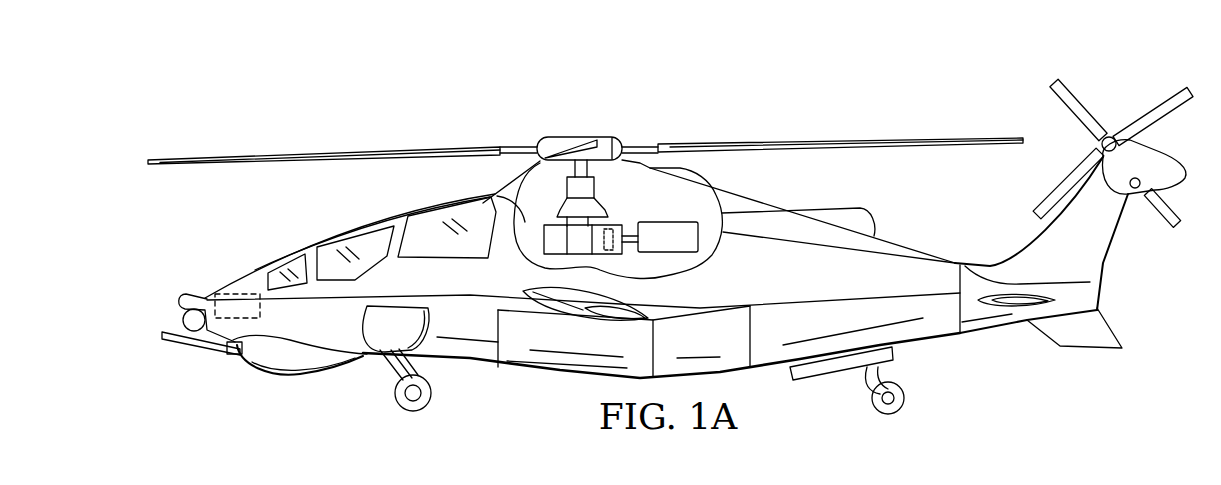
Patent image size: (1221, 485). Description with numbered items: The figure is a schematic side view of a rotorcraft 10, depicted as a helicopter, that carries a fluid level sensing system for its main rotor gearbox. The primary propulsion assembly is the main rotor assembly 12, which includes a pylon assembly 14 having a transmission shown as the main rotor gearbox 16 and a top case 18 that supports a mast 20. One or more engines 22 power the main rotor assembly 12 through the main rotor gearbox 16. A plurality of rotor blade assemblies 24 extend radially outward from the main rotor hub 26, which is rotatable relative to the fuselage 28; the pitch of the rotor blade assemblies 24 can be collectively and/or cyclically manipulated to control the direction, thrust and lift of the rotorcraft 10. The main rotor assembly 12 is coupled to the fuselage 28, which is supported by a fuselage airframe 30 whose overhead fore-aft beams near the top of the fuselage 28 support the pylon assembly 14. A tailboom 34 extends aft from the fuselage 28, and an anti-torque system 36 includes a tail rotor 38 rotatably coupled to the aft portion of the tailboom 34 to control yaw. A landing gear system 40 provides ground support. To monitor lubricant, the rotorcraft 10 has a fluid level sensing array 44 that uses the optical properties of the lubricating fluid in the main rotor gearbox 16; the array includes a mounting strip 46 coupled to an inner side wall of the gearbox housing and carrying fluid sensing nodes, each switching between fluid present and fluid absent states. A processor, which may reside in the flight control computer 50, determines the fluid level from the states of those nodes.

The rotorcraft 10 is at (303, 98).
The main rotor assembly 12 is at (589, 125).
The pylon assembly 14 is at (616, 197).
The main rotor gearbox 16 is at (543, 237).
The top case 18 is at (557, 194).
The mast 20 is at (603, 137).
The engines 22 is at (717, 205).
The rotor blade assemblies 24 is at (192, 153).
The main rotor hub 26 is at (547, 136).
The fuselage 28 is at (275, 262).
The fuselage airframe 30 is at (714, 200).
The tailboom 34 is at (953, 262).
The anti-torque system 36 is at (1114, 130).
The tail rotor 38 is at (1082, 102).
The landing gear system 40 is at (397, 398).
The fluid level sensing array 44 is at (634, 250).
The mounting strip 46 is at (686, 262).
The flight control computer 50 is at (232, 292).